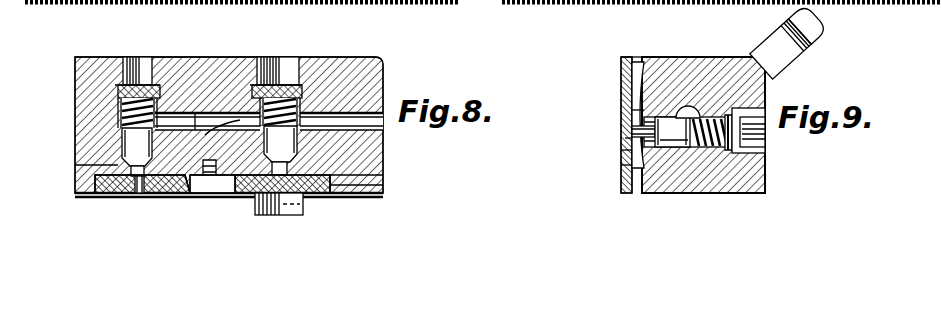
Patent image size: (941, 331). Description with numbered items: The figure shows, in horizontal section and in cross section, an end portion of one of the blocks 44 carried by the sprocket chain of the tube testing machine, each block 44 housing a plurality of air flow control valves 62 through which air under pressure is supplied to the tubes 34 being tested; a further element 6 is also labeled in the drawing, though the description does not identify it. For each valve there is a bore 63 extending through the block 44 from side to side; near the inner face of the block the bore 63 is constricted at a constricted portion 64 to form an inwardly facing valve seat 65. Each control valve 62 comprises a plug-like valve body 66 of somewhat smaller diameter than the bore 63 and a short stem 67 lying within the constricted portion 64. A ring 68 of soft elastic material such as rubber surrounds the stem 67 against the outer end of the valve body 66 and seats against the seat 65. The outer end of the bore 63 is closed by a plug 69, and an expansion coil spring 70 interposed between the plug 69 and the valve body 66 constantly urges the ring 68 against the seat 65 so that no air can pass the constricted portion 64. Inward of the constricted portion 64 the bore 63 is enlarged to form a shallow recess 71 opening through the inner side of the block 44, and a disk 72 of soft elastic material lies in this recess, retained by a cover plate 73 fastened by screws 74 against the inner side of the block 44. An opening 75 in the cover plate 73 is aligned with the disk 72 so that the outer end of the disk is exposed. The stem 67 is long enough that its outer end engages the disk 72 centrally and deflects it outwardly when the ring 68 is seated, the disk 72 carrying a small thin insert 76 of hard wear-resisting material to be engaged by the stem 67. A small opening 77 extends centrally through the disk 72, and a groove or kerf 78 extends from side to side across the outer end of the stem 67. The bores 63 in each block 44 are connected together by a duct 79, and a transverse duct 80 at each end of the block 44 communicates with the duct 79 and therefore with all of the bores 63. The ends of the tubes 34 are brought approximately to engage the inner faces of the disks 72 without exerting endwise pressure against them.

In FIG. 8, the bolt 6 is at (279, 50).
In FIG. 8, the tube 34 is at (230, 193).
In FIG. 8, the block 44 is at (368, 66).
In FIG. 9, the block 44 is at (712, 68).
In FIG. 8, the air flow control valve 62 is at (143, 50).
In FIG. 8, the bore 63 is at (120, 122).
In FIG. 9, the bore 63 is at (706, 140).
In FIG. 8, the constricted portion 64 is at (105, 166).
In FIG. 9, the constricted portion 64 is at (641, 115).
In FIG. 8, the valve seat 65 is at (134, 168).
In FIG. 9, the valve seat 65 is at (624, 152).
In FIG. 8, the valve body 66 is at (132, 140).
In FIG. 9, the valve body 66 is at (668, 142).
In FIG. 8, the stem 67 is at (202, 122).
In FIG. 9, the stem 67 is at (624, 100).
In FIG. 8, the ring 68 is at (269, 122).
In FIG. 9, the ring 68 is at (630, 140).
In FIG. 8, the plug 69 is at (123, 60).
In FIG. 9, the plug 69 is at (790, 138).
In FIG. 8, the expansion coil spring 70 is at (127, 101).
In FIG. 9, the expansion coil spring 70 is at (697, 142).
In FIG. 8, the recess 71 is at (95, 184).
In FIG. 9, the recess 71 is at (626, 59).
In FIG. 8, the disk 72 is at (78, 194).
In FIG. 9, the disk 72 is at (624, 88).
In FIG. 8, the cover plate 73 is at (362, 196).
In FIG. 8, the screw 74 is at (208, 190).
In FIG. 8, the opening 75 is at (105, 193).
In FIG. 9, the opening 75 is at (622, 162).
In FIG. 8, the insert 76 is at (178, 193).
In FIG. 9, the insert 76 is at (630, 125).
In FIG. 8, the opening 77 is at (139, 193).
In FIG. 9, the opening 77 is at (636, 130).
In FIG. 8, the kerf 78 is at (383, 179).
In FIG. 8, the duct 79 is at (205, 118).
In FIG. 9, the duct 79 is at (688, 108).
In FIG. 9, the transverse duct 80 is at (772, 85).